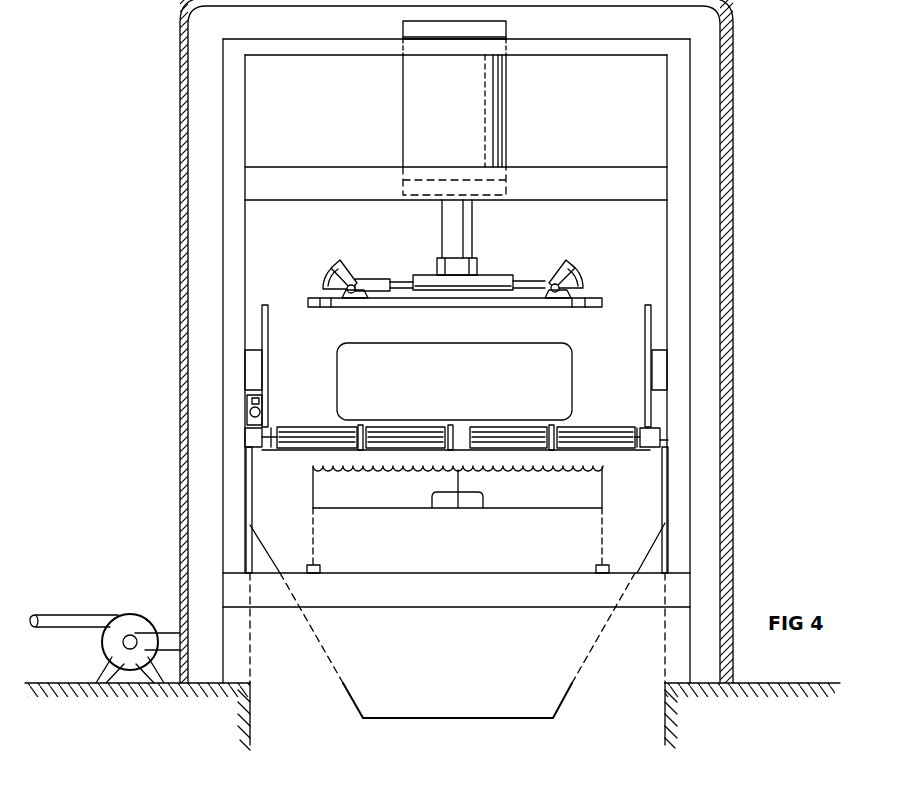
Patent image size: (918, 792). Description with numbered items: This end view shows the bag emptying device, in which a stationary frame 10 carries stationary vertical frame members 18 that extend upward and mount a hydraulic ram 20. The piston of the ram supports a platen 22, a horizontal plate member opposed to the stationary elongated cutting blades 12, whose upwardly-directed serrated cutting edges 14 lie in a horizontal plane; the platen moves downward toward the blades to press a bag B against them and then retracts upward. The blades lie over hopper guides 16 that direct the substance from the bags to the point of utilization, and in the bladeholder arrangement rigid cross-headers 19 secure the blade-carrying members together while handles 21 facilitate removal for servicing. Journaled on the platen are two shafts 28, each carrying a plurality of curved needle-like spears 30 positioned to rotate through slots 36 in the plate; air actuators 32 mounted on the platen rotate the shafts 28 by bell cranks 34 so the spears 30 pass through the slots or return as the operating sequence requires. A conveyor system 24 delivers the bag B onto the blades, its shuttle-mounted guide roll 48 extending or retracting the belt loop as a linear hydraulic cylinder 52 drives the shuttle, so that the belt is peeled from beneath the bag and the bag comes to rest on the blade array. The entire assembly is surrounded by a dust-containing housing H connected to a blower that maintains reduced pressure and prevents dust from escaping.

The stationary frame 10 is at (222, 478).
The stationary elongated cutting blades 12 is at (342, 510).
The serrated cutting edges 14 is at (590, 466).
The hopper guides 16 is at (563, 705).
The stationary vertical frame members 18 is at (222, 262).
The cross-headers 19 is at (458, 548).
The hydraulic ram 20 is at (468, 96).
The handles 21 is at (485, 497).
The platen 22 is at (597, 298).
The conveyor system 24 is at (618, 422).
The shafts 28 is at (553, 285).
The curved needle-like spears 30 is at (333, 270).
The air actuators 32 is at (446, 283).
The bell cranks 34 is at (353, 292).
The slots 36 is at (318, 299).
The guide roll 48 is at (295, 427).
The linear hydraulic cylinder 52 is at (250, 410).
The bag B is at (452, 379).
The dust-containing housing H is at (722, 252).